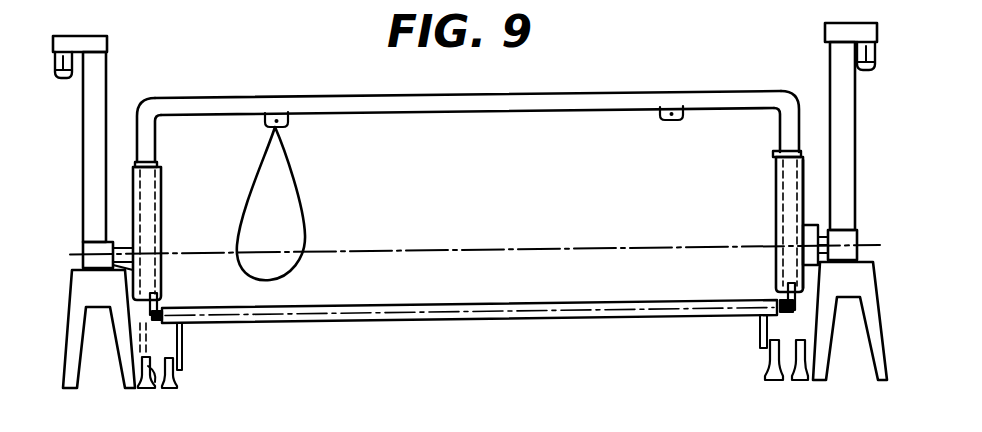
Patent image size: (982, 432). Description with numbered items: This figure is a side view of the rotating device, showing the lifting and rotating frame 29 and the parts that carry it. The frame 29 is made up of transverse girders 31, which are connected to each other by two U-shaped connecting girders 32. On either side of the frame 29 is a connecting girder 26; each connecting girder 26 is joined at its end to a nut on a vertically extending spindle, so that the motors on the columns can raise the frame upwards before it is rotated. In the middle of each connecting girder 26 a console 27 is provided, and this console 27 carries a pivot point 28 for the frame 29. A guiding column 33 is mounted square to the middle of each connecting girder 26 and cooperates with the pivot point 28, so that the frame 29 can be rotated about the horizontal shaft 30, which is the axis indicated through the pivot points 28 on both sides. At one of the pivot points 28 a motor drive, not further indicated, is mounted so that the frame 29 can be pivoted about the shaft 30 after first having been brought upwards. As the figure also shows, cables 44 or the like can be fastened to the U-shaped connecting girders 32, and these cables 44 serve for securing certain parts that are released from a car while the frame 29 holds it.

The connecting girder 26 is at (848, 237).
The console 27 is at (818, 228).
The pivot point 28 is at (113, 257).
The lifting and rotating frame 29 is at (468, 96).
The horizontal shaft 30 is at (583, 247).
The transverse girder 31 is at (137, 298).
The U-shaped connecting girder 32 is at (583, 100).
The guiding column 33 is at (803, 180).
The cable 44 is at (302, 217).